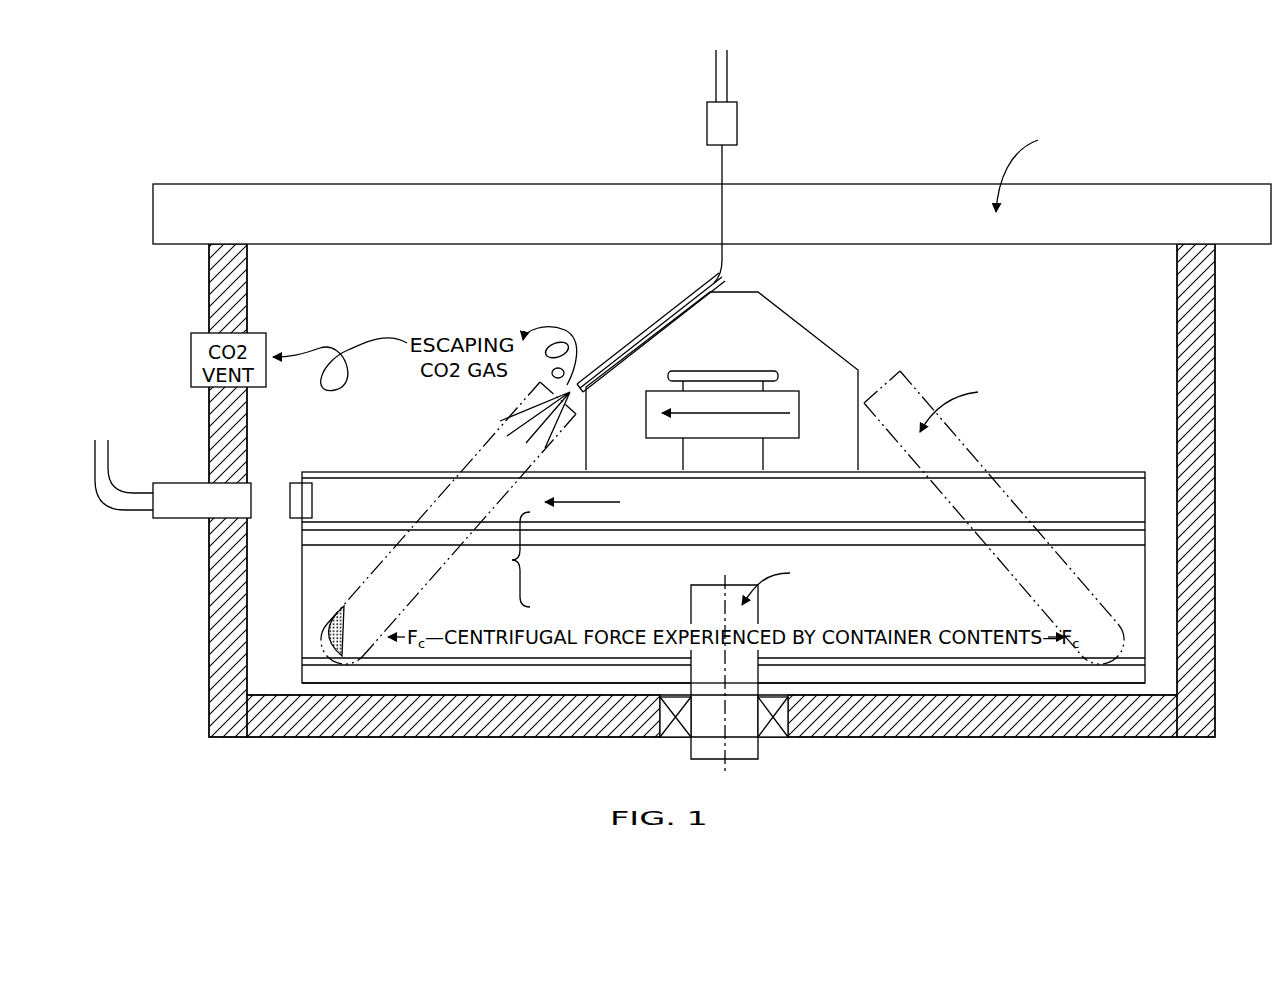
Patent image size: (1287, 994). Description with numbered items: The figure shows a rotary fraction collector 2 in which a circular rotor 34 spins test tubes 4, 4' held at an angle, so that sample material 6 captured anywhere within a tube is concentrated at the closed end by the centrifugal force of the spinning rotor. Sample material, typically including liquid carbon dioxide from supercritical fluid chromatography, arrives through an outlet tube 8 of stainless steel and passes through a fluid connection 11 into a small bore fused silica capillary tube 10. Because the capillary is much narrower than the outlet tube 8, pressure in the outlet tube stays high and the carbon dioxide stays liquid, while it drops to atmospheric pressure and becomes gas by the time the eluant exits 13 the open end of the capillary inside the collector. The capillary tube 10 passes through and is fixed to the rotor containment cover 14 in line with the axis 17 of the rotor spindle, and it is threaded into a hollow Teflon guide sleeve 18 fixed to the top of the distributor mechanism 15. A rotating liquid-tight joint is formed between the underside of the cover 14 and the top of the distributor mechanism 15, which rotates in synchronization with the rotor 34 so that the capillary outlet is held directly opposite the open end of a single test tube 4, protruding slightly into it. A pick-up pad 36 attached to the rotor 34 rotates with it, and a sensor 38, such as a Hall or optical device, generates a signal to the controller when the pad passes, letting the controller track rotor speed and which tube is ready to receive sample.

The rotary fraction collector 2 is at (200, 125).
The test tube 4 is at (448, 523).
The collection tube 4' is at (1016, 517).
The sample material 6 is at (337, 600).
The outlet tube 8 is at (730, 62).
The capillary tube 10 is at (718, 157).
The fluid connection 11 is at (738, 116).
The eluant exit 13 is at (562, 396).
The rotor containment cover 14 is at (1077, 226).
The distributor mechanism 15 is at (843, 353).
The axis of the rotor spindle 17 is at (727, 742).
The Teflon guide sleeve 18 is at (628, 338).
The rotor 34 is at (723, 577).
The pick-up pad 36 is at (297, 520).
The sensor 38 is at (165, 508).